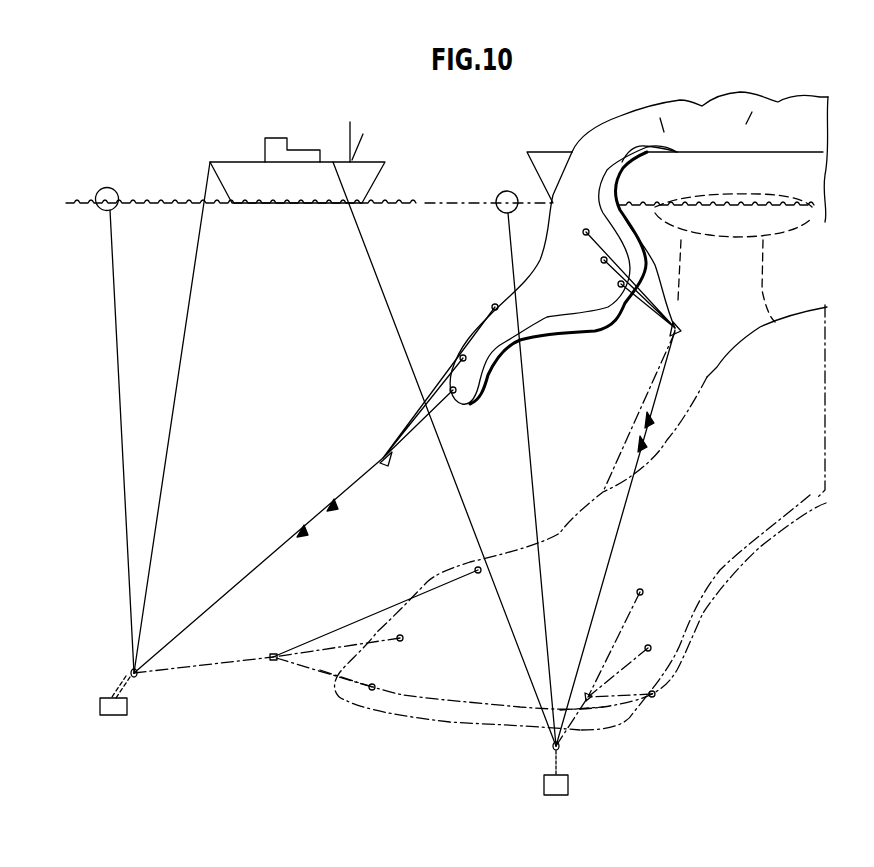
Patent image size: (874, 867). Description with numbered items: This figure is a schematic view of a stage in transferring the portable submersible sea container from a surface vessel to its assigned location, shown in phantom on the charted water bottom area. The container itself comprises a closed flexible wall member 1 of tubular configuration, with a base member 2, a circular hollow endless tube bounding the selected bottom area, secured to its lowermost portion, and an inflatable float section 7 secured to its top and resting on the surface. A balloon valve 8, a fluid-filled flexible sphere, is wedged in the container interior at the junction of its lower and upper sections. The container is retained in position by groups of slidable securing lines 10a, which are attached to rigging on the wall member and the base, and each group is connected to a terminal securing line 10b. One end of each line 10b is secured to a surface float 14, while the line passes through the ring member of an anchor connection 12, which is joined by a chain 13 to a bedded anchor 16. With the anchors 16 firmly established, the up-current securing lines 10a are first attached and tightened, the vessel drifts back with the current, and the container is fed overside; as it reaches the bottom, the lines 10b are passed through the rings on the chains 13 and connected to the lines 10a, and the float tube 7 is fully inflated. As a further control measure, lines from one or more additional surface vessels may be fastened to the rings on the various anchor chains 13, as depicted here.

The flexible wall member 1 is at (543, 255).
The base member 2 is at (570, 323).
The float section 7 is at (776, 215).
The balloon valve 8 is at (618, 538).
The securing lines 10a is at (443, 352).
The terminal securing line 10b is at (117, 390).
The anchor connection 12 is at (139, 678).
The chain 13 is at (553, 770).
The float 14 is at (109, 194).
The anchor 16 is at (114, 717).